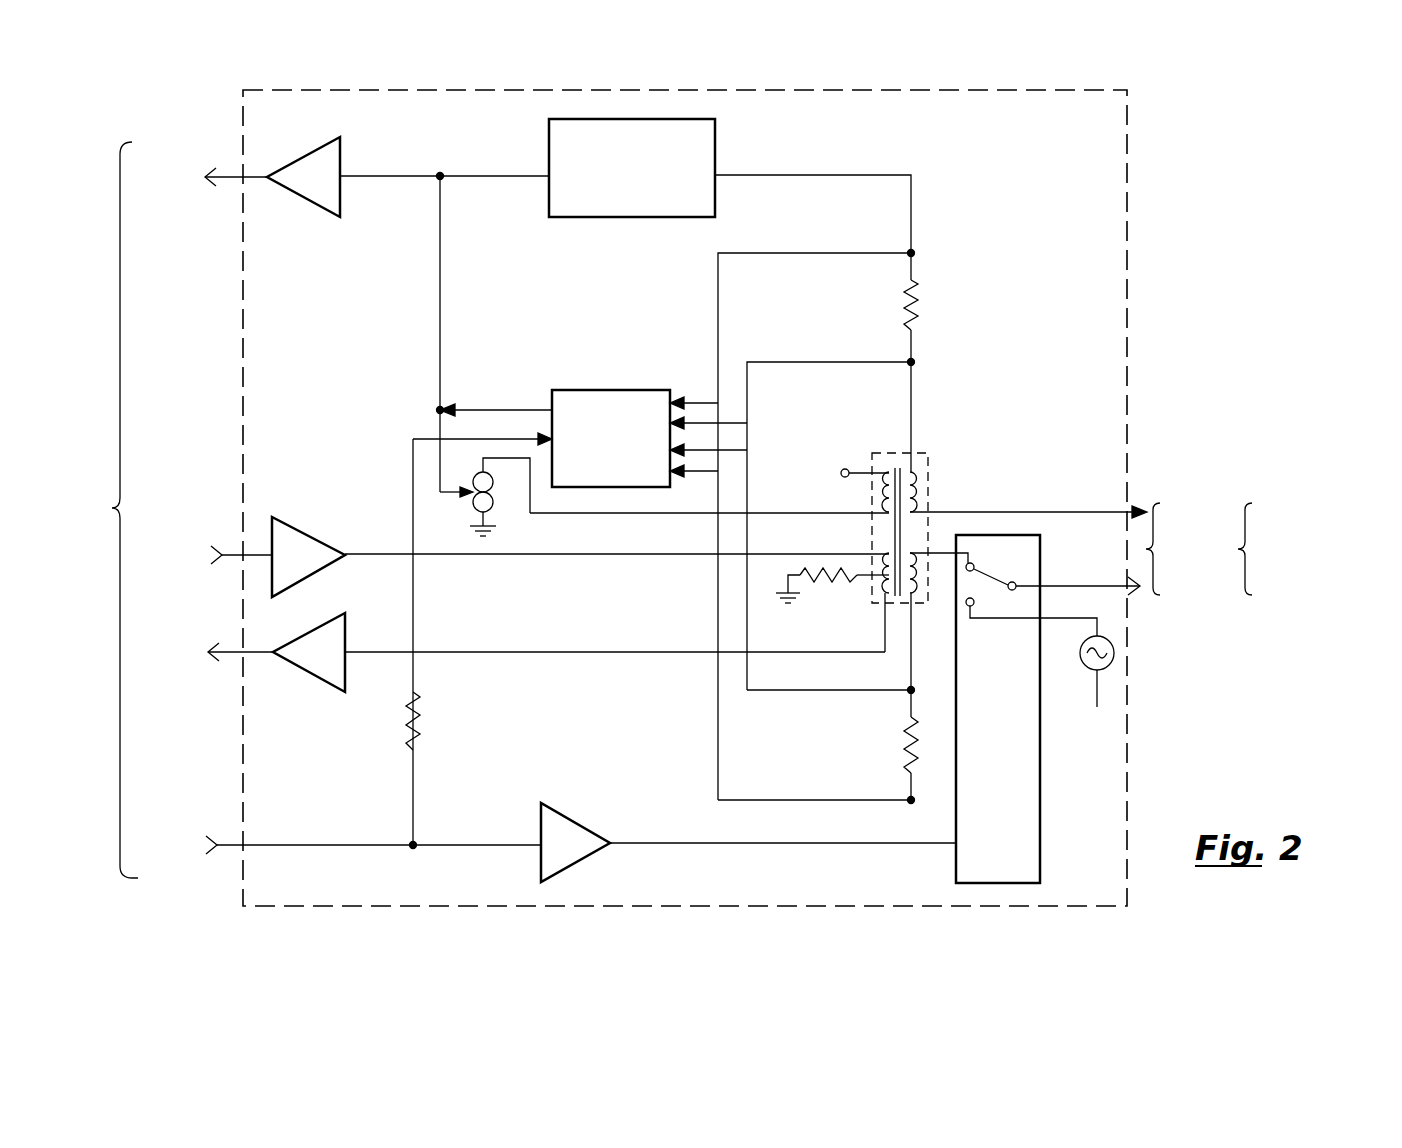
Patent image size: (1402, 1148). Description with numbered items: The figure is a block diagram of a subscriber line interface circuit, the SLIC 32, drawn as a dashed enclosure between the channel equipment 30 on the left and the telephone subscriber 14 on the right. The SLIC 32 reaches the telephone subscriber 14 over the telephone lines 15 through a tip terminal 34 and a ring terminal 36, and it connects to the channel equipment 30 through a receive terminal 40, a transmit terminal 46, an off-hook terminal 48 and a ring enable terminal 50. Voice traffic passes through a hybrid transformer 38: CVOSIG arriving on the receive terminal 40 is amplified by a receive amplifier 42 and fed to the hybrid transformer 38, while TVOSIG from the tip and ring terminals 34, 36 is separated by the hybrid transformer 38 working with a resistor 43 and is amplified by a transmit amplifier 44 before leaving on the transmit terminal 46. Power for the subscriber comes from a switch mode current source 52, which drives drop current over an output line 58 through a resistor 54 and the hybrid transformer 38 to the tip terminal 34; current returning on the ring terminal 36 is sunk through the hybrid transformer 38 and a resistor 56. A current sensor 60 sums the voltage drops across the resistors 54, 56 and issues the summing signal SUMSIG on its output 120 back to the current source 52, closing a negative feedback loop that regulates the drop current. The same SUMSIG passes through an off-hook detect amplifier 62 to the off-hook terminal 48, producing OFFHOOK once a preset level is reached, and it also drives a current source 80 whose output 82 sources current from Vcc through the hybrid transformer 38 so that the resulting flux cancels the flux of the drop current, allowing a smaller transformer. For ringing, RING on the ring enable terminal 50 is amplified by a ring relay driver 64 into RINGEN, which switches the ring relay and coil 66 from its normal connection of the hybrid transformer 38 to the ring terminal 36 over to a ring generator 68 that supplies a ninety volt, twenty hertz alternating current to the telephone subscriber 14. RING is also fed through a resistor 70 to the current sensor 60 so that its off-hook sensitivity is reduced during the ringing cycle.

The telephone subscriber 14 is at (1298, 549).
The telephone lines 15 is at (1160, 517).
The channel equipment 30 is at (113, 510).
The SLIC 32 is at (1130, 205).
The tip terminal 34 is at (1139, 507).
The ring terminal 36 is at (1135, 582).
The hybrid transformer 38 is at (928, 456).
The receive terminal 40 is at (222, 562).
The receive amplifier 42 is at (306, 578).
The resistor 43 is at (826, 580).
The transmit amplifier 44 is at (307, 636).
The transmit terminal 46 is at (216, 648).
The off-hook terminal 48 is at (213, 174).
The ring enable terminal 50 is at (220, 836).
The switch mode current source 52 is at (588, 218).
The resistor 54 is at (904, 301).
The resistor 56 is at (906, 743).
The output line 58 is at (784, 175).
The current sensor 60 is at (588, 390).
The off-hook detect amplifier 62 is at (306, 152).
The ring relay driver 64 is at (566, 826).
The ring relay and coil 66 is at (1040, 838).
The ring generator 68 is at (1116, 683).
The resistor 70 is at (408, 721).
The current source 80 is at (494, 482).
The output 82 is at (766, 514).
The output 120 is at (468, 178).